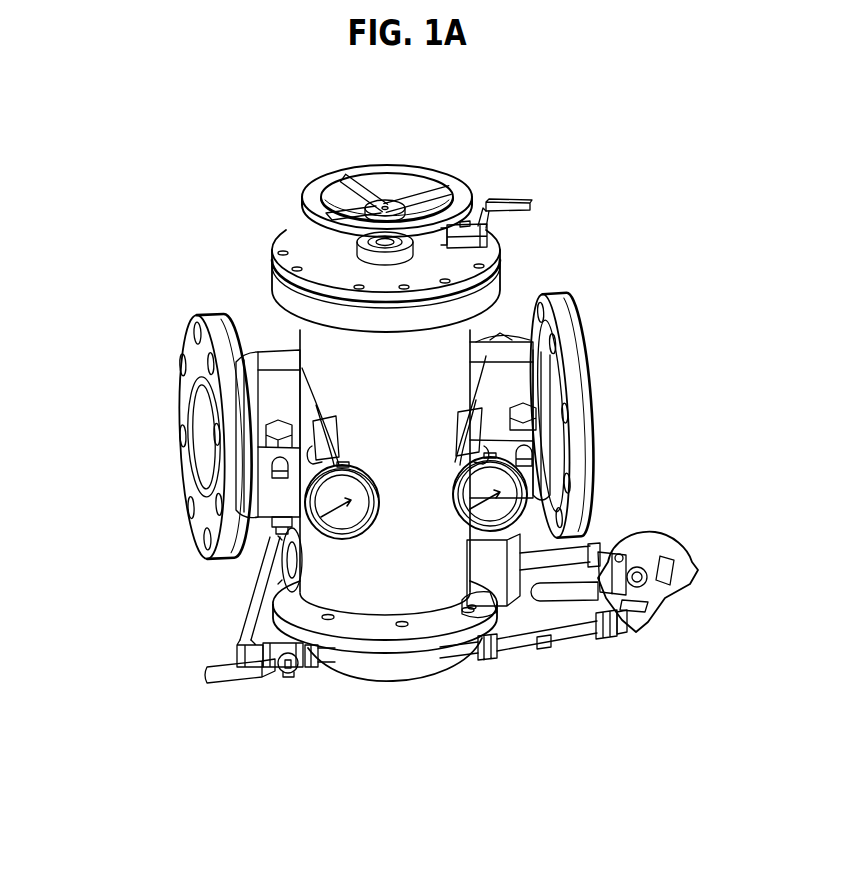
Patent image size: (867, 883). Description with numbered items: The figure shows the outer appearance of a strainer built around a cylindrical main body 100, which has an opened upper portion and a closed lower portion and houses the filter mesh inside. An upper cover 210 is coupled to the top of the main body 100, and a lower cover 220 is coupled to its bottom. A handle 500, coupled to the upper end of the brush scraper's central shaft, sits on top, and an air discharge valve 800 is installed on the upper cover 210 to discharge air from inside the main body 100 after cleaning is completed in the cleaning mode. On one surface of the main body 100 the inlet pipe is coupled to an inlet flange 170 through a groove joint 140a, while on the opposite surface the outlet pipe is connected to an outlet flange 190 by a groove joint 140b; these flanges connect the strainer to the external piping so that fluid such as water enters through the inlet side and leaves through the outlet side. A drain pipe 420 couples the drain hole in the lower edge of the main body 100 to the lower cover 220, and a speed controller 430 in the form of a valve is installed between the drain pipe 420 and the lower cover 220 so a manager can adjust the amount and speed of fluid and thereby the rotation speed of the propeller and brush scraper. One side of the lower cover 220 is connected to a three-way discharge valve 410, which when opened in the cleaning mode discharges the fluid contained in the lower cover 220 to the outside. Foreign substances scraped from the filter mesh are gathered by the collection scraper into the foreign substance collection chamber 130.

The main body 100 is at (310, 338).
The foreign substance collection chamber 130 is at (500, 590).
The groove joint 140a is at (260, 516).
The groove joint 140b is at (516, 345).
The inlet flange 170 is at (190, 346).
The outlet flange 190 is at (578, 397).
The upper cover 210 is at (303, 238).
The lower cover 220 is at (391, 682).
The 3-way discharge valve 410 is at (660, 590).
The drain pipe 420 is at (255, 606).
The speed controller 430 is at (283, 683).
The handle 500 is at (386, 161).
The air discharge valve 800 is at (492, 230).